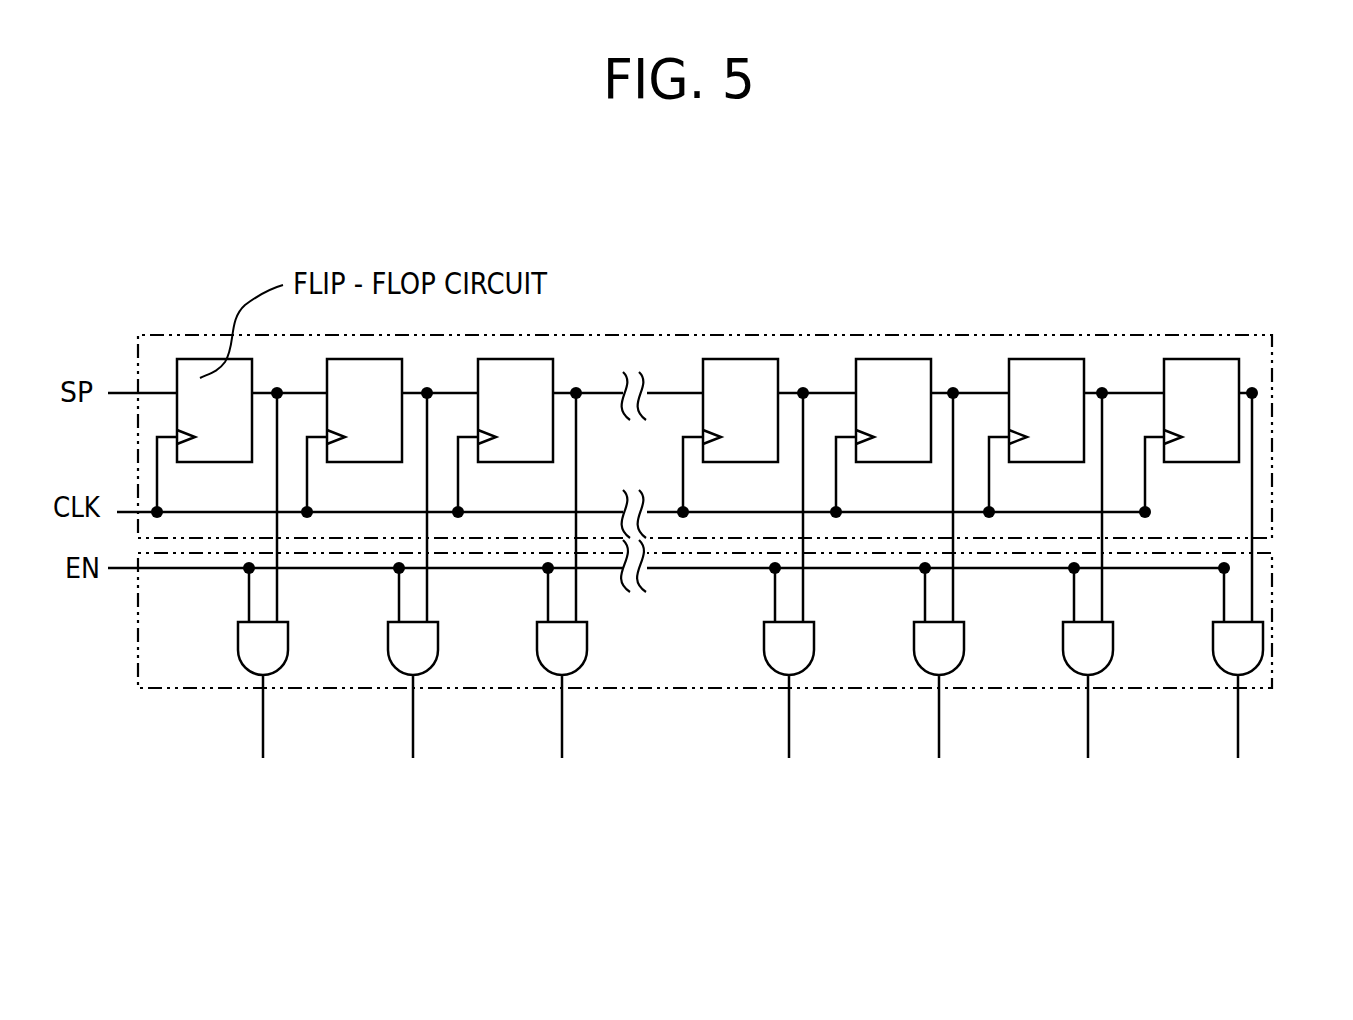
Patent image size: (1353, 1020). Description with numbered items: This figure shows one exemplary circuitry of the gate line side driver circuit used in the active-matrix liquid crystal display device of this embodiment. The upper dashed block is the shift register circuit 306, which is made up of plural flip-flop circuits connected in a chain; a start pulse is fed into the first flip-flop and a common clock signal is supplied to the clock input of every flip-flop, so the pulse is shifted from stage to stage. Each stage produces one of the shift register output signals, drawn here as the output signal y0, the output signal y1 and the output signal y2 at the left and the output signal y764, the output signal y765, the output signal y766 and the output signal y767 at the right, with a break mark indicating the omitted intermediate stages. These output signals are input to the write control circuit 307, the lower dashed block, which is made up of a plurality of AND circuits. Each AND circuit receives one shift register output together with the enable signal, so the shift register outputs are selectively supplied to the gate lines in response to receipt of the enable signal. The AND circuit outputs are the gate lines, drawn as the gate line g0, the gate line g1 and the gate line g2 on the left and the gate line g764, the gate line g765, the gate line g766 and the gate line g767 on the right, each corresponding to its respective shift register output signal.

The shift register circuit 306 is at (743, 478).
The write control circuit 307 is at (743, 666).
The output signal y0 is at (273, 484).
The output signal y1 is at (423, 484).
The output signal y2 is at (573, 484).
The output signal y764 is at (814, 484).
The output signal y765 is at (964, 484).
The output signal y766 is at (1116, 484).
The output signal y767 is at (1276, 470).
The gate line g0 is at (273, 700).
The gate line g1 is at (423, 700).
The gate line g2 is at (572, 700).
The gate line g764 is at (815, 700).
The gate line g765 is at (964, 700).
The gate line g766 is at (1112, 700).
The gate line g767 is at (1290, 618).